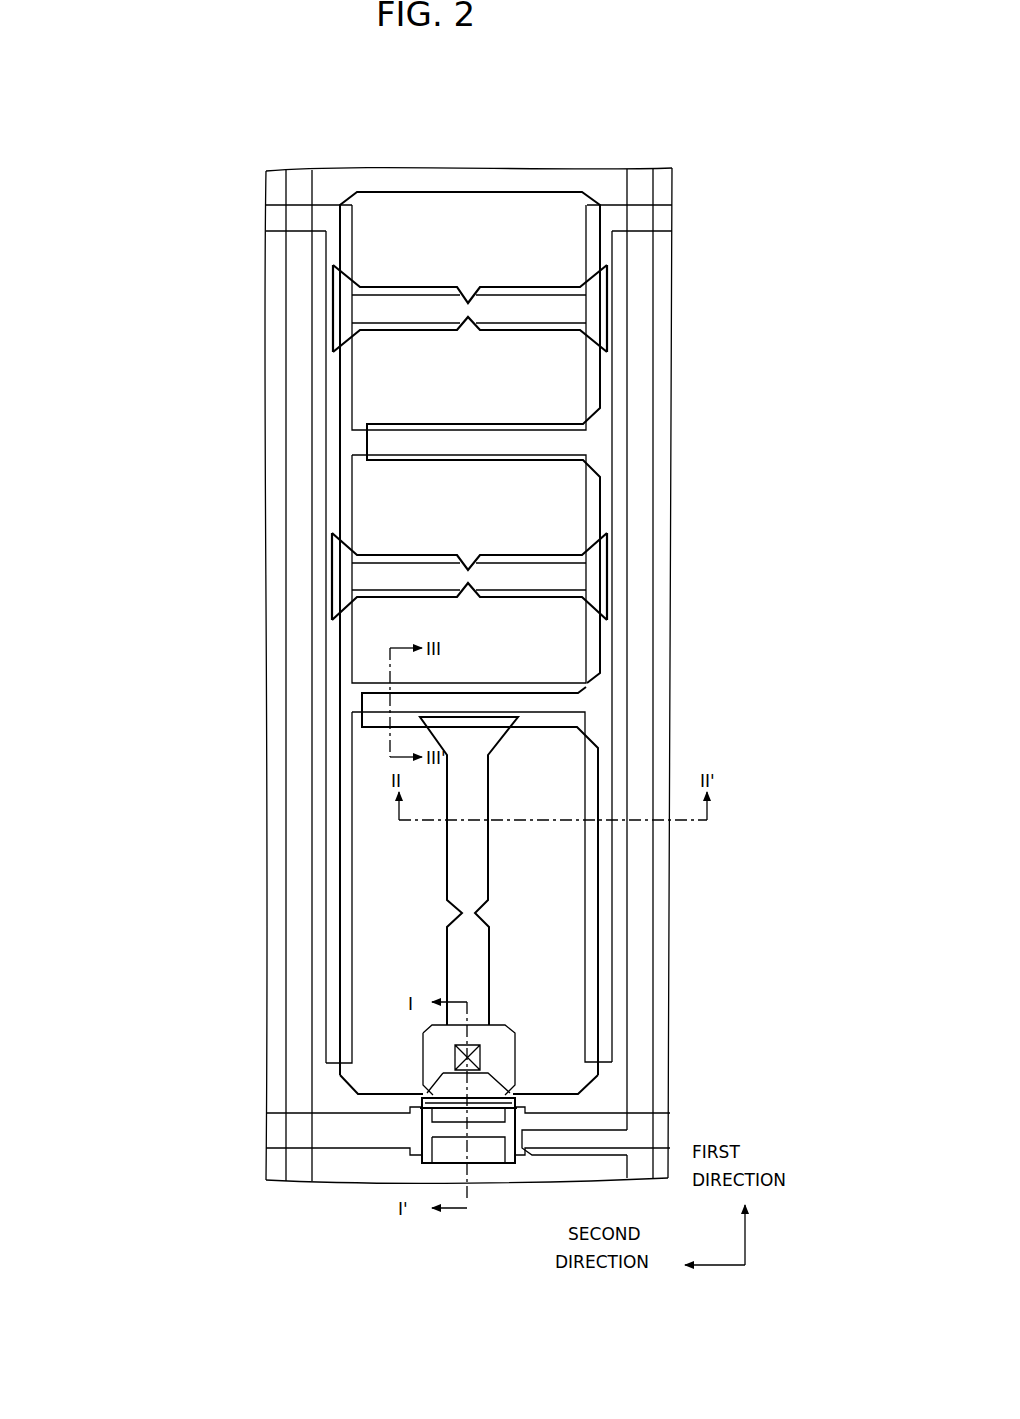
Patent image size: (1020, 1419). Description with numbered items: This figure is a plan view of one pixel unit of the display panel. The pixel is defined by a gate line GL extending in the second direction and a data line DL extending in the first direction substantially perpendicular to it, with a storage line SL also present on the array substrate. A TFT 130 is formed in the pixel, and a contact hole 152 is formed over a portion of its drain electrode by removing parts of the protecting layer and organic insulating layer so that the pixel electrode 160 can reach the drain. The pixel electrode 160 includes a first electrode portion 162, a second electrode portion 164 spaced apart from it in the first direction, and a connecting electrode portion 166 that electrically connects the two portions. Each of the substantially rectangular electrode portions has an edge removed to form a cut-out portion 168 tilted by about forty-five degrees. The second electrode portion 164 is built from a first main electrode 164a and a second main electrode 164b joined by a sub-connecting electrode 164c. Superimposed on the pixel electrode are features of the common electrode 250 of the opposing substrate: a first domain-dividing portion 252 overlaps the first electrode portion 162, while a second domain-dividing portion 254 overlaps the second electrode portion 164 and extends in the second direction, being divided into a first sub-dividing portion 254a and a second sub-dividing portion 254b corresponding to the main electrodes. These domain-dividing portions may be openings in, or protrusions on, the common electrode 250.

The TFT 130 is at (481, 1172).
The contact hole 152 is at (475, 1072).
The pixel electrode 160 is at (336, 650).
The first electrode portion 162 is at (365, 948).
The second electrode portion 164 is at (357, 444).
The first main electrode 164a is at (370, 515).
The second main electrode 164b is at (370, 377).
The sub-connecting electrode 164c is at (355, 440).
The connecting electrode portion 166 is at (357, 697).
The cut-out portion 168 is at (317, 1049).
The common electrode 250 is at (450, 232).
The first domain-dividing portion 252 is at (489, 958).
The second domain-dividing portion 254 is at (566, 445).
The first sub-dividing portion 254a is at (540, 579).
The second sub-dividing portion 254b is at (550, 328).
The storage line SL is at (278, 217).
The data line DL is at (643, 853).
The gate line GL is at (347, 1135).